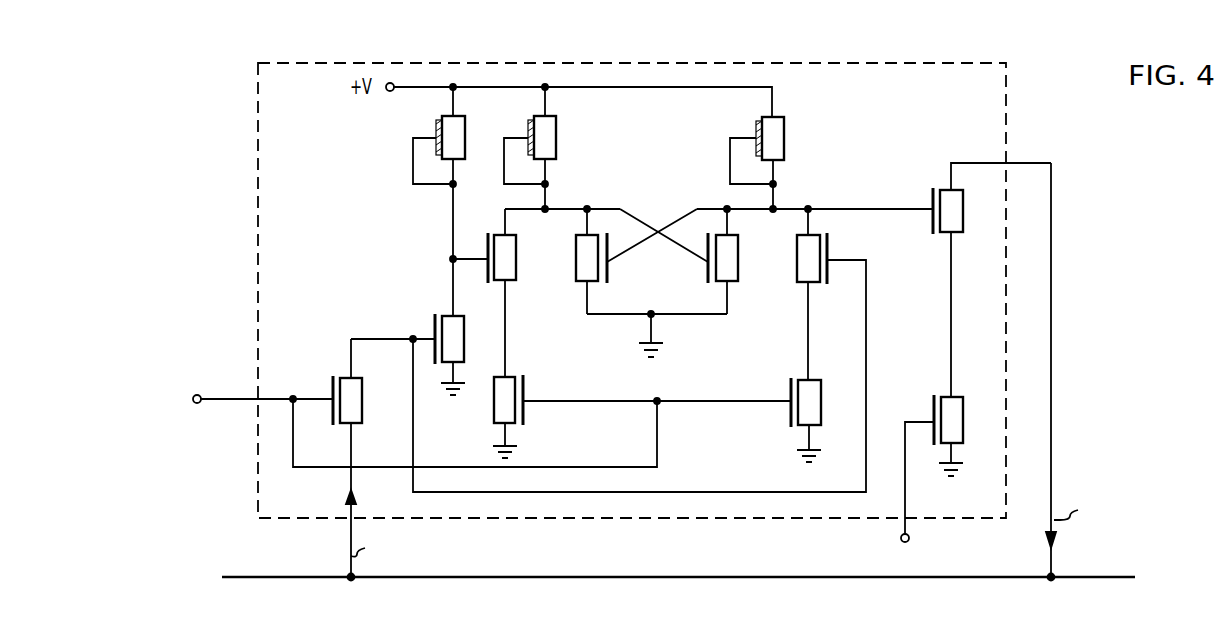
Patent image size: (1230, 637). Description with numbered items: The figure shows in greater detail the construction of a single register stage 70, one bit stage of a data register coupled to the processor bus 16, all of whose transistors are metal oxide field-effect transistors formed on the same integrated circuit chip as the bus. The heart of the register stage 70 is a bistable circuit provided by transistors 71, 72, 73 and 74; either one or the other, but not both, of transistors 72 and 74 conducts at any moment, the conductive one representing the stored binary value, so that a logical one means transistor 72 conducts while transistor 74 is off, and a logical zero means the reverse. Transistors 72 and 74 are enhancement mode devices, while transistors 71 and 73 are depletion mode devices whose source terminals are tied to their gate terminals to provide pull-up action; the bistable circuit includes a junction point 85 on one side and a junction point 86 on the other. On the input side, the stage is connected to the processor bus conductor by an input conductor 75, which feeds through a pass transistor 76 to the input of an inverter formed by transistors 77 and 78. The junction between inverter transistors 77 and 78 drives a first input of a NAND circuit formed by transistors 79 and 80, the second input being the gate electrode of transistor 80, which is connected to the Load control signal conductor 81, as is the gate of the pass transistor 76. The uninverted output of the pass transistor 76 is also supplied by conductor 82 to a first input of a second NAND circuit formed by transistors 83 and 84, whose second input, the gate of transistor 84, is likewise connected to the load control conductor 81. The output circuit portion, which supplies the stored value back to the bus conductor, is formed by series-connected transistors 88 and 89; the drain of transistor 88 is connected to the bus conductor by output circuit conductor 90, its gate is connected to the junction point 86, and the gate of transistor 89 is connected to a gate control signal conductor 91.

The processor bus 16 is at (301, 573).
The register stage 70 is at (258, 270).
The depletion mode transistor 71 is at (553, 134).
The enhancement mode transistor 72 is at (587, 277).
The depletion mode transistor 73 is at (782, 135).
The enhancement mode transistor 74 is at (718, 276).
The input conductor 75 is at (351, 531).
The pass transistor 76 is at (360, 400).
The inverter transistor 77 is at (460, 354).
The inverter transistor 78 is at (458, 135).
The NAND circuit transistor 79 is at (497, 236).
The NAND circuit transistor 80 is at (499, 404).
The Load control signal conductor 81 is at (244, 399).
The conductor 82 is at (405, 436).
The NAND circuit transistor 83 is at (804, 274).
The NAND circuit transistor 84 is at (812, 386).
The flip-flop node 85 is at (547, 209).
The junction point 86 is at (776, 208).
The output transistor 88 is at (948, 193).
The output transistor 89 is at (947, 398).
The output circuit conductor 90 is at (1051, 431).
The gate control signal conductor 91 is at (900, 532).